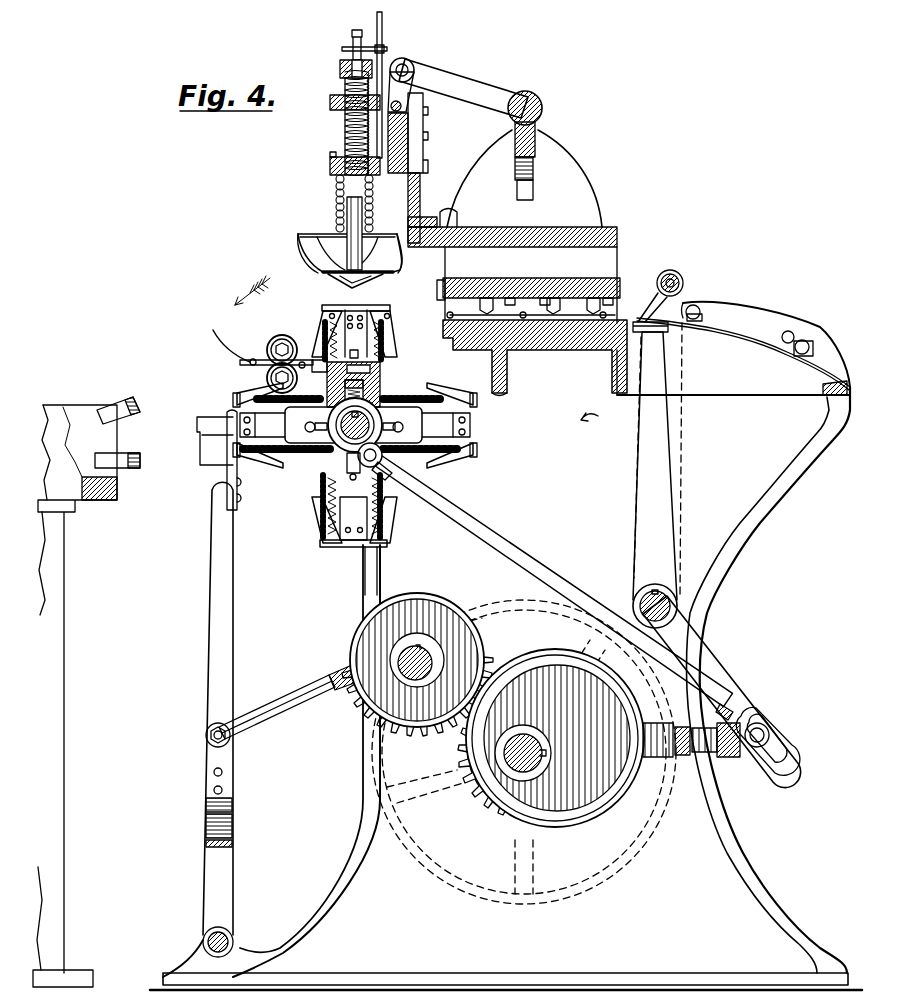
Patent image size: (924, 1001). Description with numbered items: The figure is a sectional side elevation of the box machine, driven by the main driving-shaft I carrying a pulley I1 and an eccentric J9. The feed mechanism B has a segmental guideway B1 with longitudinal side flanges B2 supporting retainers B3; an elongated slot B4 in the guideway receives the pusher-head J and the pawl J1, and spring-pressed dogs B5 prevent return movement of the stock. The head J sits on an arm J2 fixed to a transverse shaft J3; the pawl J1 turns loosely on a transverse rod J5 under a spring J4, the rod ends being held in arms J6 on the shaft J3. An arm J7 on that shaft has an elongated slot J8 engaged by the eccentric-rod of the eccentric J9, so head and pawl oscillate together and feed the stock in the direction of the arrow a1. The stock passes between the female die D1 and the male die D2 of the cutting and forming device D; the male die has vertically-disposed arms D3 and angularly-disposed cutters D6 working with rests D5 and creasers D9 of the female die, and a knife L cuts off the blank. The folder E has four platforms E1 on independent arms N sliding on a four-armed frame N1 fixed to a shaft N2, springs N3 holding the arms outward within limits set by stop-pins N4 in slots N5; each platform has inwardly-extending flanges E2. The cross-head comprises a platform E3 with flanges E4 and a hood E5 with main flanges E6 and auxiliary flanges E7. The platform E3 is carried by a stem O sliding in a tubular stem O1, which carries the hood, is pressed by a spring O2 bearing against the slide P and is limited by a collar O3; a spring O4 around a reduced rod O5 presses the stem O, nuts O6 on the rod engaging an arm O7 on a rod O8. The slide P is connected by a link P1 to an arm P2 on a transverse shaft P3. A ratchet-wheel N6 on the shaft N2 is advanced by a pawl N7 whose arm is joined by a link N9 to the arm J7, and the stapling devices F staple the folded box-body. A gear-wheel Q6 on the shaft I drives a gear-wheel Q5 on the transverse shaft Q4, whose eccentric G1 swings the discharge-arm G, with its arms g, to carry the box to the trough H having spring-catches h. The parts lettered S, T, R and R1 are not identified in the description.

The stem O is at (346, 211).
The tubular stem O1 is at (345, 126).
The spring O2 is at (377, 211).
The collar O3 is at (338, 165).
The spring O4 is at (343, 112).
The reduced rod O5 is at (366, 22).
The nuts O6 is at (342, 48).
The arm O7 is at (385, 49).
The rod O8 is at (383, 22).
The slide P is at (410, 136).
The link P1 is at (408, 82).
The arm P2 is at (487, 93).
The transverse shaft P3 is at (543, 106).
The folder E is at (263, 290).
The platforms E1 is at (365, 306).
The inwardly-extending flanges E2 is at (313, 316).
The platform E3 is at (345, 278).
The flanges E4 is at (375, 279).
The hood E5 is at (318, 241).
The main set of flanges E6 is at (400, 256).
The auxiliary set of flanges E7 is at (312, 252).
The knife L is at (438, 292).
The box-blank cutting and forming device D is at (614, 279).
The female die D1 is at (556, 346).
The male die D2 is at (545, 298).
The vertically-disposed arms D3 is at (510, 298).
The rests D5 is at (600, 298).
The angularly-disposed cutters D6 is at (484, 298).
The creasers D9 is at (500, 359).
The pusher-head J is at (663, 335).
The pawl J1 is at (648, 308).
The arm J2 is at (652, 456).
The transverse shaft J3 is at (640, 601).
The spring J4 is at (667, 271).
The transverse rod J5 is at (679, 276).
The arms J6 is at (683, 444).
The arm J7 is at (745, 676).
The elongated slot J8 is at (781, 754).
The eccentric J9 is at (582, 826).
The feed mechanism B is at (766, 334).
The segmental guideway B1 is at (803, 368).
The longitudinal side flanges B2 is at (716, 309).
The retainers B3 is at (768, 334).
The elongated slot B4 is at (757, 343).
The spring-pressed dogs B5 is at (791, 338).
The spring S is at (231, 338).
The bar T is at (253, 360).
The roller R is at (284, 333).
The roller R1 is at (276, 380).
The stapling devices F is at (381, 374).
The independent arms N is at (401, 400).
The four-armed frame N1 is at (300, 456).
The shaft N2 is at (326, 456).
The springs N3 is at (401, 386).
The stop-pins N4 is at (302, 427).
The slots N5 is at (325, 425).
The ratchet-wheel N6 is at (330, 436).
The pawl N7 is at (392, 492).
The link N9 is at (505, 540).
The arms g is at (205, 441).
The oscillating arm G is at (210, 641).
The eccentric G1 is at (382, 603).
The transverse shaft Q4 is at (355, 707).
The gear-wheel Q5 is at (417, 705).
The gear-wheel Q6 is at (491, 792).
The main driving-shaft I is at (547, 743).
The pulley I1 is at (494, 896).
The receiver or trough H is at (75, 685).
The spring-catches h is at (126, 417).
The arrow a1 is at (596, 414).